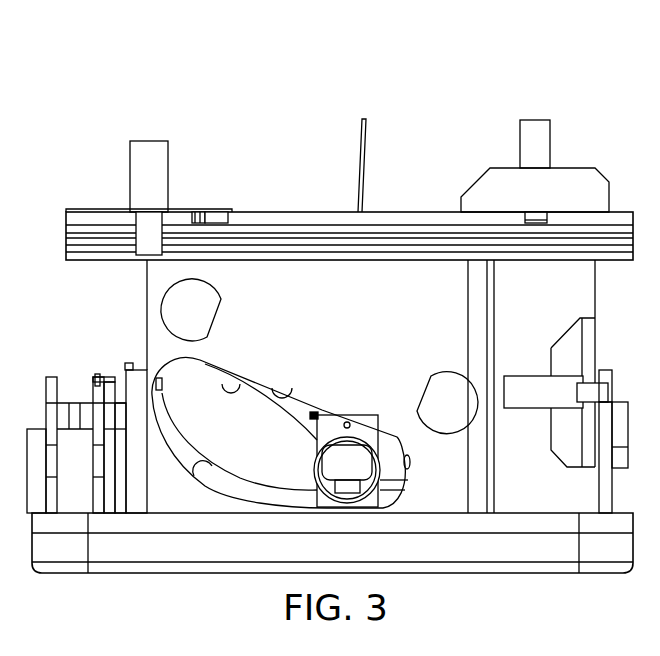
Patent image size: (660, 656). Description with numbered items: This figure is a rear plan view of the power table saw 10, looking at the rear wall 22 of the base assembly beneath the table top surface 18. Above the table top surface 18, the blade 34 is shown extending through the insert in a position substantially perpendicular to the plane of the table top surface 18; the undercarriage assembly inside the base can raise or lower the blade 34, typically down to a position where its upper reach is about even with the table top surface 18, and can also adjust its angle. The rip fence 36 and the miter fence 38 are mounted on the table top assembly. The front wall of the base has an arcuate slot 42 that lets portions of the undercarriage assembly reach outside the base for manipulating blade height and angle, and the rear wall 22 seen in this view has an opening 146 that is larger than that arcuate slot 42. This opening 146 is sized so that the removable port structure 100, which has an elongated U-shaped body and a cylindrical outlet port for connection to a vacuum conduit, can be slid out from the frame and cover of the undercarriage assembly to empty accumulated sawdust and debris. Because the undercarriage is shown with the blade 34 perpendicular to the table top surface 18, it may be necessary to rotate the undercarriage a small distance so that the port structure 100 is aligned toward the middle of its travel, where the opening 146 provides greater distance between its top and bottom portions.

The power table saw 10 is at (587, 88).
The table top surface 18 is at (285, 210).
The rear wall 22 is at (391, 290).
The blade 34 is at (367, 140).
The rip fence 36 is at (148, 140).
The miter fence 38 is at (533, 143).
The arcuate slot 42 is at (237, 398).
The removable port structure 100 is at (314, 445).
The opening 146 is at (291, 401).